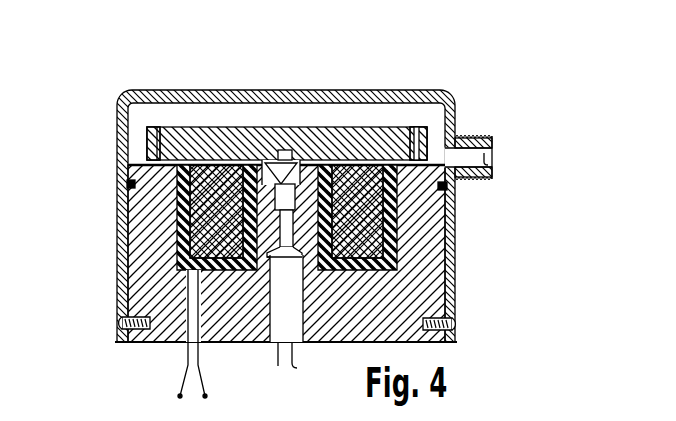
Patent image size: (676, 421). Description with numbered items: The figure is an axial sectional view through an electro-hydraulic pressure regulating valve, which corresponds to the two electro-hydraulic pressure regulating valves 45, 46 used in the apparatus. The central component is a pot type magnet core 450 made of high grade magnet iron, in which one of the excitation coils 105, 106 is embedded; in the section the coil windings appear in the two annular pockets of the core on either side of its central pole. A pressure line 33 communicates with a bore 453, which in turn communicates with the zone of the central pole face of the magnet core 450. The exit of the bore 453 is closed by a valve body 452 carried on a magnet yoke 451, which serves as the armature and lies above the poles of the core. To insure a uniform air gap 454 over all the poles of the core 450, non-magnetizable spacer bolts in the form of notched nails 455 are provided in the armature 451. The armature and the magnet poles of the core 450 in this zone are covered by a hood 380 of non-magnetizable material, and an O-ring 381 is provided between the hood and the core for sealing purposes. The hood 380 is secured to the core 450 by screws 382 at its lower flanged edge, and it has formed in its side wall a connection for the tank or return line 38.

The pressure line 33 is at (288, 367).
The tank or return line 38 is at (484, 157).
The electro-hydraulic pressure regulating valve 45 is at (540, 53).
The electro-hydraulic pressure regulating valve 46 is at (525, 41).
The excitation coil 105 is at (398, 233).
The excitation coil 106 is at (382, 217).
The hood 380 is at (456, 107).
The O-ring 381 is at (448, 190).
The screws 382 is at (460, 325).
The pot type magnet core 450 is at (148, 215).
The magnet yoke 451 is at (377, 136).
The valve body 452 is at (296, 171).
The bore 453 is at (263, 168).
The air gap 454 is at (172, 165).
The notched nails 455 is at (160, 150).